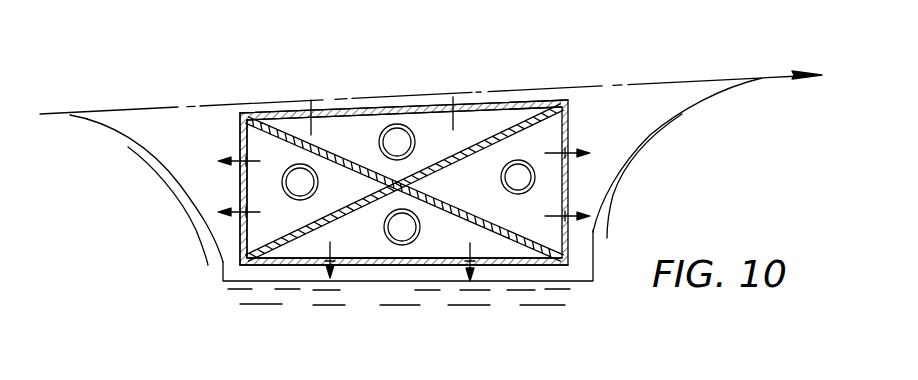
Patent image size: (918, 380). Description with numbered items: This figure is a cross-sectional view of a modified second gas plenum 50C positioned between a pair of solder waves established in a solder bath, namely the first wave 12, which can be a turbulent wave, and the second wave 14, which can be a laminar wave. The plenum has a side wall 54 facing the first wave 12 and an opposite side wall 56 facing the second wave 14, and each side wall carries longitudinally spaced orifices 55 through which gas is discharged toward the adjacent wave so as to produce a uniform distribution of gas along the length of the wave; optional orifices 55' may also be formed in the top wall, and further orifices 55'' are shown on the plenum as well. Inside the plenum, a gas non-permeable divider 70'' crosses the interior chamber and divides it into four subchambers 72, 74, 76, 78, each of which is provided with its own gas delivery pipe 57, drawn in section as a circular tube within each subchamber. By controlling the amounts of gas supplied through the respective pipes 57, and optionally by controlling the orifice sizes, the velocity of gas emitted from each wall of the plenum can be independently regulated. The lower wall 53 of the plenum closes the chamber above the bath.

The first solder wave 12 is at (124, 132).
The second solder wave 14 is at (665, 107).
The second gas plenum 50C is at (430, 92).
The bottom wall 53 is at (283, 266).
The side wall 54 is at (240, 237).
The orifices 55 is at (402, 163).
The top wall orifices 55' is at (383, 296).
The top openings 55'' is at (419, 85).
The side wall 56 is at (568, 183).
The gas delivery pipe 57 is at (292, 166).
The gas non-permeable divider 70'' is at (405, 140).
The subchamber 72 is at (328, 137).
The subchamber 74 is at (258, 184).
The subchamber 76 is at (368, 243).
The subchamber 78 is at (538, 229).